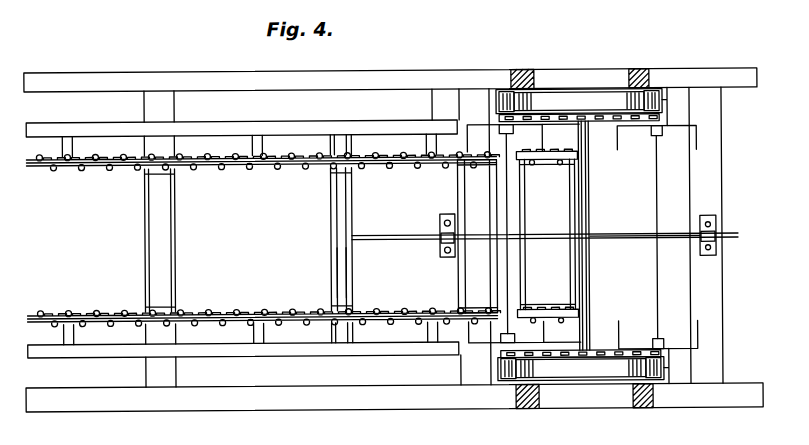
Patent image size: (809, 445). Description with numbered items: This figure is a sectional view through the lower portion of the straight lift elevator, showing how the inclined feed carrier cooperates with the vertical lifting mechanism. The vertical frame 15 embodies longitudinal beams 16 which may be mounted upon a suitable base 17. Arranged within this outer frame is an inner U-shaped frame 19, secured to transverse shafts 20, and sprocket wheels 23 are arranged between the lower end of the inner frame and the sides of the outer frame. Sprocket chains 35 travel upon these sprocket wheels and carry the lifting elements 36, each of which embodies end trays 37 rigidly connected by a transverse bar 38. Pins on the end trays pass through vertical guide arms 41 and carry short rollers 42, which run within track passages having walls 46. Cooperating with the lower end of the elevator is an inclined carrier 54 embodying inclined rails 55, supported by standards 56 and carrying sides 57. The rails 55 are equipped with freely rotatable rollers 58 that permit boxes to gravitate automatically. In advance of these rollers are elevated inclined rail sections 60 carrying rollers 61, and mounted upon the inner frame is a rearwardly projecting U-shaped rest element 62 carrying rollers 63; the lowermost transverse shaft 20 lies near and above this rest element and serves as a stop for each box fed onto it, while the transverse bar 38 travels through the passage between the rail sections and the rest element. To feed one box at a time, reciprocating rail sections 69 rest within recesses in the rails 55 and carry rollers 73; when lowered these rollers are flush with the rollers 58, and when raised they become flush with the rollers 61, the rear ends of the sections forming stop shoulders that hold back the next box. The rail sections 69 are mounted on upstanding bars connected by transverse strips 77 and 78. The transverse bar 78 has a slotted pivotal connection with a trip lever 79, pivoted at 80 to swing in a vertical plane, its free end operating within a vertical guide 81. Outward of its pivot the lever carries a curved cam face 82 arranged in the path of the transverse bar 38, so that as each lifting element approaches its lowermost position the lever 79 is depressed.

The vertical frame 15 is at (642, 78).
The longitudinal beams 16 is at (528, 95).
The base 17 is at (391, 74).
The inner U-shaped frame 19 is at (601, 115).
The transverse shafts 20 is at (592, 249).
The sprocket wheels 23 is at (640, 127).
The sprocket chains 35 is at (473, 118).
The lifting elements 36 is at (473, 128).
The end trays 37 is at (690, 126).
The transverse bar 38 is at (656, 197).
The guide arms 41 is at (675, 115).
The short rollers 42 is at (658, 100).
The walls 46 is at (506, 100).
The inclined carrier 54 is at (108, 170).
The inclined rails 55 is at (230, 169).
The standards 56 is at (157, 244).
The sides 57 is at (200, 131).
The rollers 58 is at (130, 157).
The elevated inclined rail sections 60 is at (440, 168).
The rollers 61 is at (478, 164).
The U-shaped rest element 62 is at (523, 185).
The rollers 63 is at (519, 155).
The rail sections 69 is at (305, 170).
The rollers 73 is at (345, 157).
The transverse strip 77 is at (347, 284).
The transverse bar 78 is at (354, 255).
The trip lever 79 is at (395, 237).
The pivot 80 is at (447, 249).
The vertical guide 81 is at (712, 240).
The cam face 82 is at (602, 236).